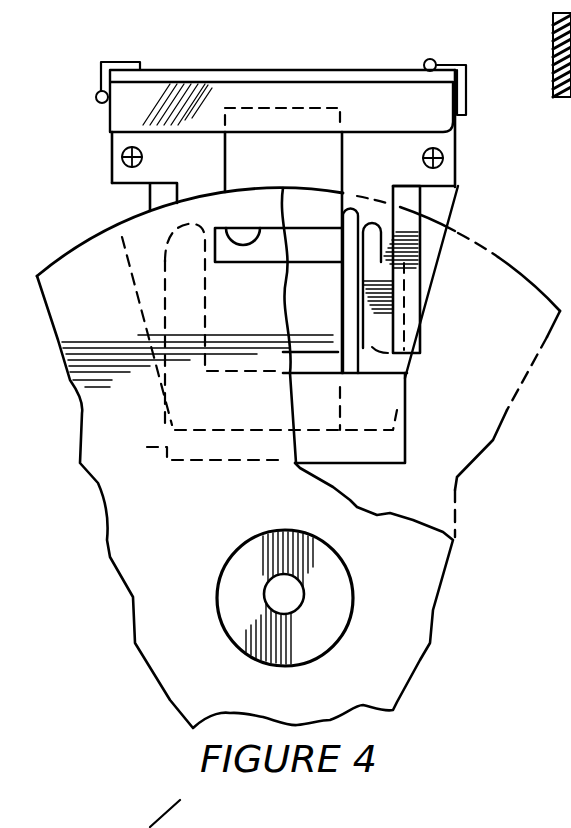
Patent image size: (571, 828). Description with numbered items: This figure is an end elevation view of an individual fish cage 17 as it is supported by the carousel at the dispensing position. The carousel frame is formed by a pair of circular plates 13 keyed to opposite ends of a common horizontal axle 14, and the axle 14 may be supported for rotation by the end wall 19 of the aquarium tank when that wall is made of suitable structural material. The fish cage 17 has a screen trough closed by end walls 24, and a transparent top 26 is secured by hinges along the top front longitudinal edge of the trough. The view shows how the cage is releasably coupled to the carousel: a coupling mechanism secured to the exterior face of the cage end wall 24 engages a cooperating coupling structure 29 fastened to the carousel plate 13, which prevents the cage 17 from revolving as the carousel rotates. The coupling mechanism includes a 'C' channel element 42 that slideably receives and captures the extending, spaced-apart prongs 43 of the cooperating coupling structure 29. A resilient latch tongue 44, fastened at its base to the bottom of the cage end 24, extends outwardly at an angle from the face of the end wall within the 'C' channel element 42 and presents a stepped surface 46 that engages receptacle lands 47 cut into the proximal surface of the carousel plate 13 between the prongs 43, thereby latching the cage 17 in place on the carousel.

The circular plate 13 is at (110, 300).
The horizontal axle 14 is at (290, 598).
The fish cage 17 is at (468, 190).
The end wall of the tank 19 is at (570, 428).
The end wall of the cage 24 is at (130, 203).
The transparent top 26 is at (255, 70).
The cooperating coupling structure 29 is at (147, 447).
The 'C' channel element 42 is at (400, 314).
The prong 43 is at (377, 232).
The resilient latch tongue 44 is at (300, 177).
The stepped surface 46 is at (293, 230).
The receptacle land 47 is at (213, 226).